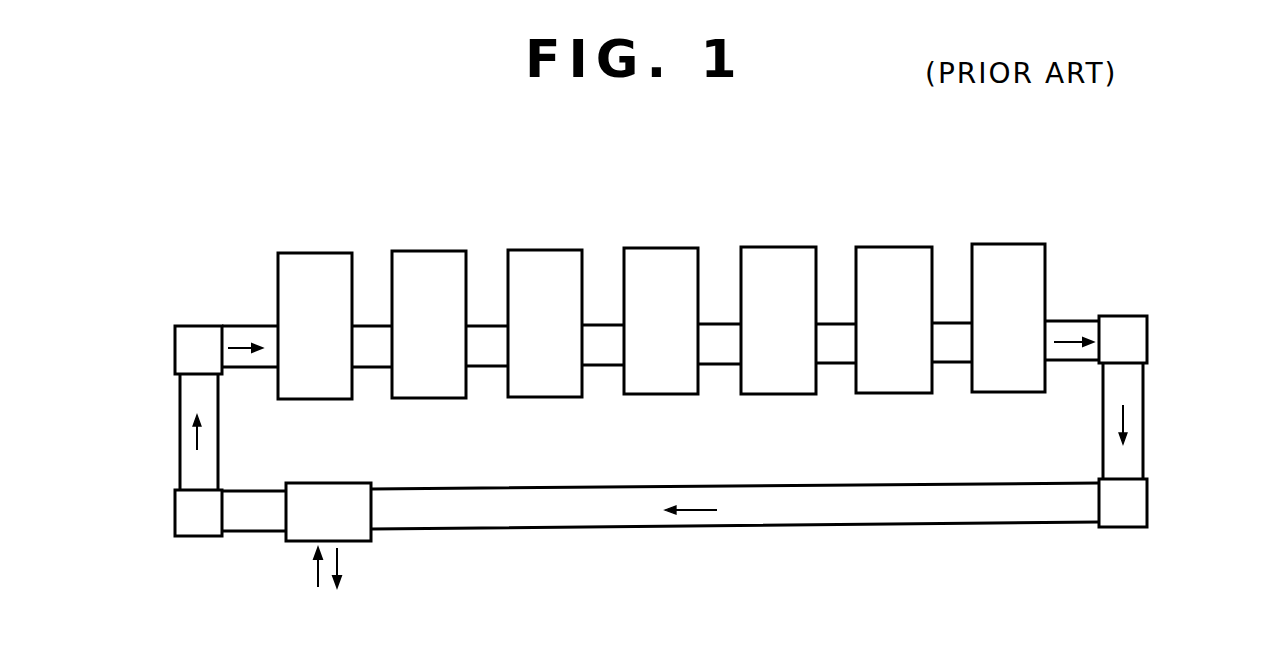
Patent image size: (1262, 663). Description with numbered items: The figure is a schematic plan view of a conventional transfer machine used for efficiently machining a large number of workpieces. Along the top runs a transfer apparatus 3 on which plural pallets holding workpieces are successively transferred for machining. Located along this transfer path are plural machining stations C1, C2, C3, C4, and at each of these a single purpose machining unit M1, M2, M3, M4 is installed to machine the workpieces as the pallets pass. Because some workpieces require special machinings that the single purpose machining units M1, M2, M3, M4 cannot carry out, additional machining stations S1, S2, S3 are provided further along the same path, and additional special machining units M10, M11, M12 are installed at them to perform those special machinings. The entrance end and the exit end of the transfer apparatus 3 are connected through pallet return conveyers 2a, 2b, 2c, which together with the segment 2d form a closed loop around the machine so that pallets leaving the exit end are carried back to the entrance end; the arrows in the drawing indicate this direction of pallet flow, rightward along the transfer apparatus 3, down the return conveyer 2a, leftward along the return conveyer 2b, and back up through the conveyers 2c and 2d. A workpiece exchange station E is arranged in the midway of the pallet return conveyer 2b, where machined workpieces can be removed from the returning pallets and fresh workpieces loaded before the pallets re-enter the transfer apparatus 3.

The machining station C1 is at (303, 249).
The machining station C2 is at (433, 248).
The machining station C3 is at (546, 247).
The machining station C4 is at (657, 245).
The additional machining station S1 is at (769, 243).
The additional machining station S2 is at (884, 243).
The additional machining station S3 is at (995, 243).
The single purpose machining unit M1 is at (305, 399).
The single purpose machining unit M2 is at (435, 398).
The single purpose machining unit M3 is at (545, 397).
The single purpose machining unit M4 is at (660, 394).
The special machining unit M10 is at (775, 394).
The special machining unit M11 is at (900, 393).
The special machining unit M12 is at (1008, 392).
The workpiece exchange station E is at (333, 481).
The transfer apparatus 3 is at (1070, 330).
The pallet return conveyer 2a is at (1130, 386).
The pallet return conveyer 2b is at (850, 517).
The pallet return conveyer 2c is at (257, 522).
The conveyor section 2d is at (188, 407).